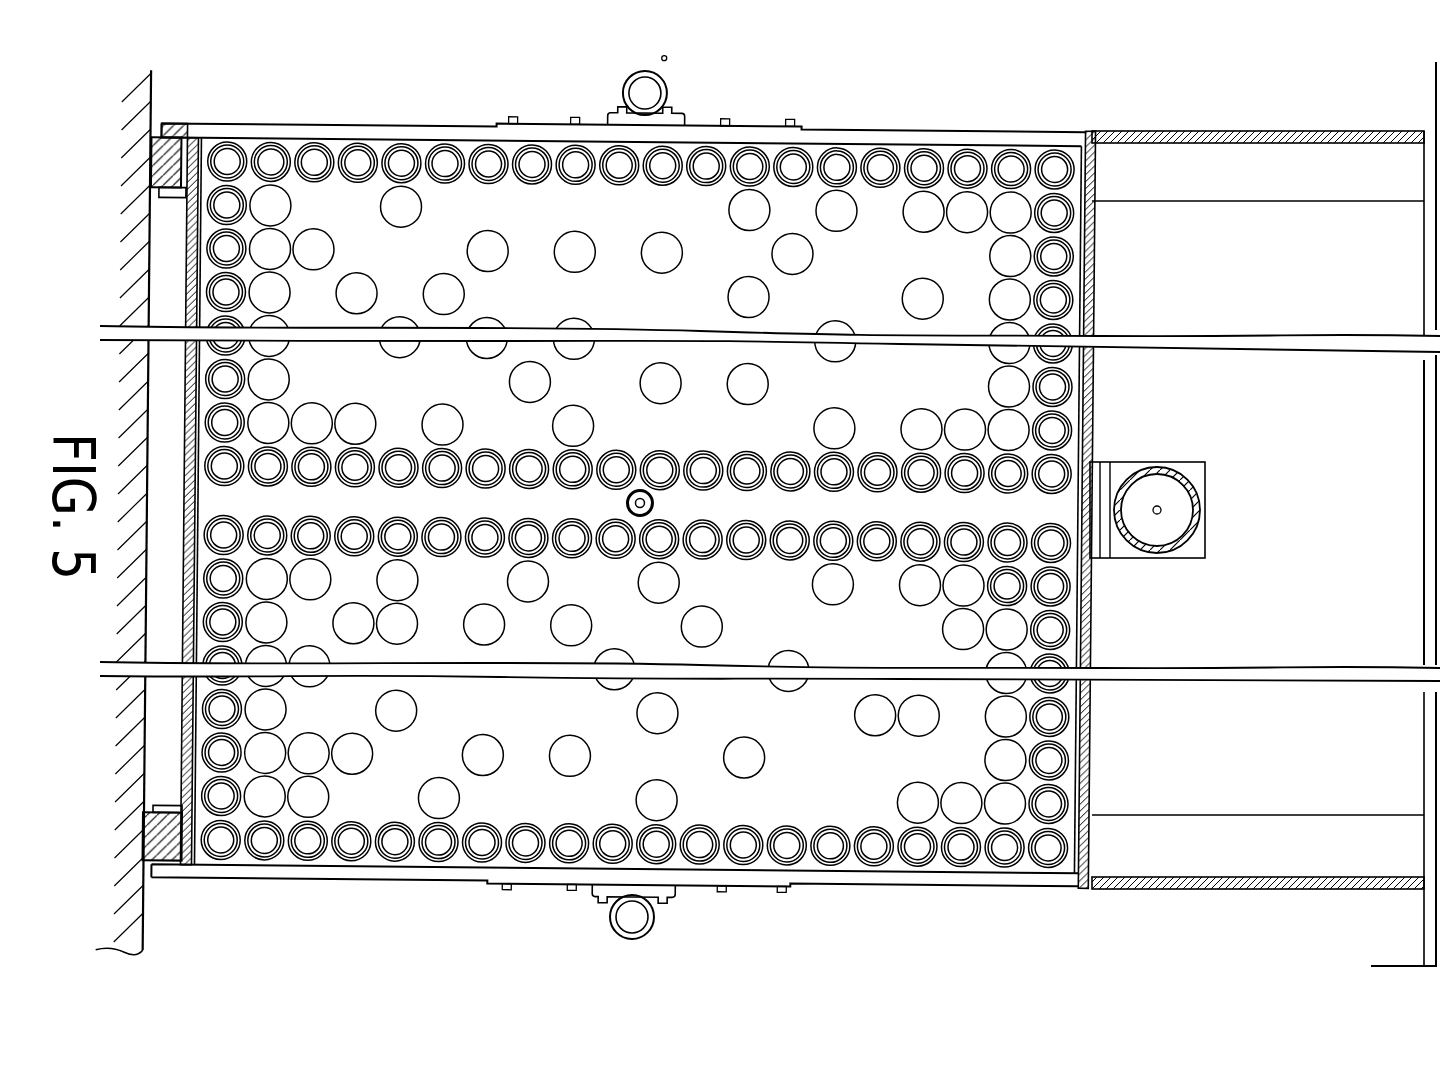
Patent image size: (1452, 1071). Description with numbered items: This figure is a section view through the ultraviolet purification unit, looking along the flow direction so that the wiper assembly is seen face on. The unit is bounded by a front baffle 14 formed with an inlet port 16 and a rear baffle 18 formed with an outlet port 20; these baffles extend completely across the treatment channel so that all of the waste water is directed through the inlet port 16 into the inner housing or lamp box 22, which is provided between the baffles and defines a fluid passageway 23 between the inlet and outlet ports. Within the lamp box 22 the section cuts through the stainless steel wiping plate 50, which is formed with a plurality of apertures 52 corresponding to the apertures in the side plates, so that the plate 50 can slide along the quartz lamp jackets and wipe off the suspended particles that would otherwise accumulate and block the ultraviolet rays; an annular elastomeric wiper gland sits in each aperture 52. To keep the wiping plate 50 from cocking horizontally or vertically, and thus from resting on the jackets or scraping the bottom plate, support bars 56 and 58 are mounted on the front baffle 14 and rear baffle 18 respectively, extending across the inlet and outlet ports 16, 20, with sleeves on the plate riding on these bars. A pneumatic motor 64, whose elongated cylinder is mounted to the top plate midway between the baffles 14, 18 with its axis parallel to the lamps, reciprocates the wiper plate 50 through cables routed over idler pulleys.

The front baffle 14 is at (1247, 131).
The inlet port 16 is at (334, 131).
The rear baffle 18 is at (1220, 890).
The outlet port 20 is at (1071, 881).
The inner housing or lamp box 22 is at (1101, 261).
The fluid passageway 23 is at (907, 147).
The wiping plate 50 is at (1034, 734).
The apertures 52 is at (1057, 153).
The support bar 56 is at (663, 85).
The support bar 58 is at (652, 923).
The pneumatic motor 64 is at (1197, 533).